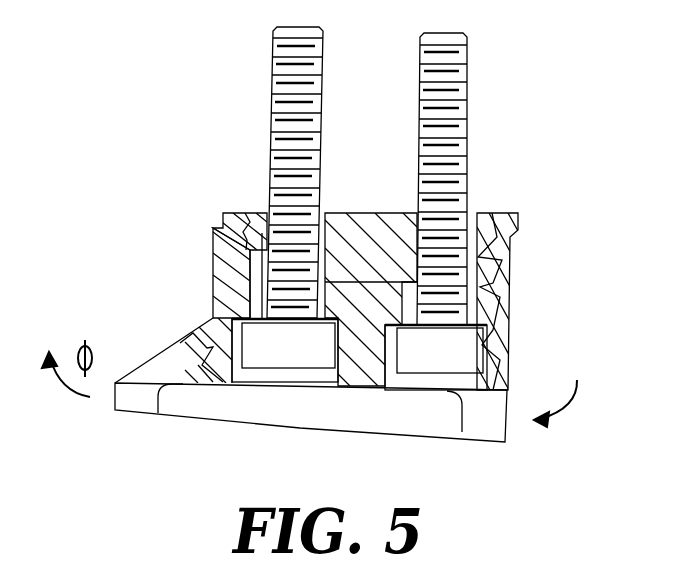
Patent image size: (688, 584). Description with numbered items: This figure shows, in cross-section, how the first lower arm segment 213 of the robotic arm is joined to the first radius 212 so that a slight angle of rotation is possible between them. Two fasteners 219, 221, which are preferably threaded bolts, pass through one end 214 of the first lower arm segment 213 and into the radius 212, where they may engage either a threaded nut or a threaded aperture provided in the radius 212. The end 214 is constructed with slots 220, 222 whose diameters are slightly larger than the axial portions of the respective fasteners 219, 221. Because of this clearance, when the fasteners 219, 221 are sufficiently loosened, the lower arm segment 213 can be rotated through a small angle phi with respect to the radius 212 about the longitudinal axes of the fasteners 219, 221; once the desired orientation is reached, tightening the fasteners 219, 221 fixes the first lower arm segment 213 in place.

The first radius 212 is at (245, 213).
The first lower arm segment 213 is at (483, 442).
The one end of the first lower arm segment 214 is at (213, 278).
The fastener 219 is at (270, 67).
The slot 220 is at (247, 295).
The fastener 221 is at (468, 72).
The slot 222 is at (478, 285).